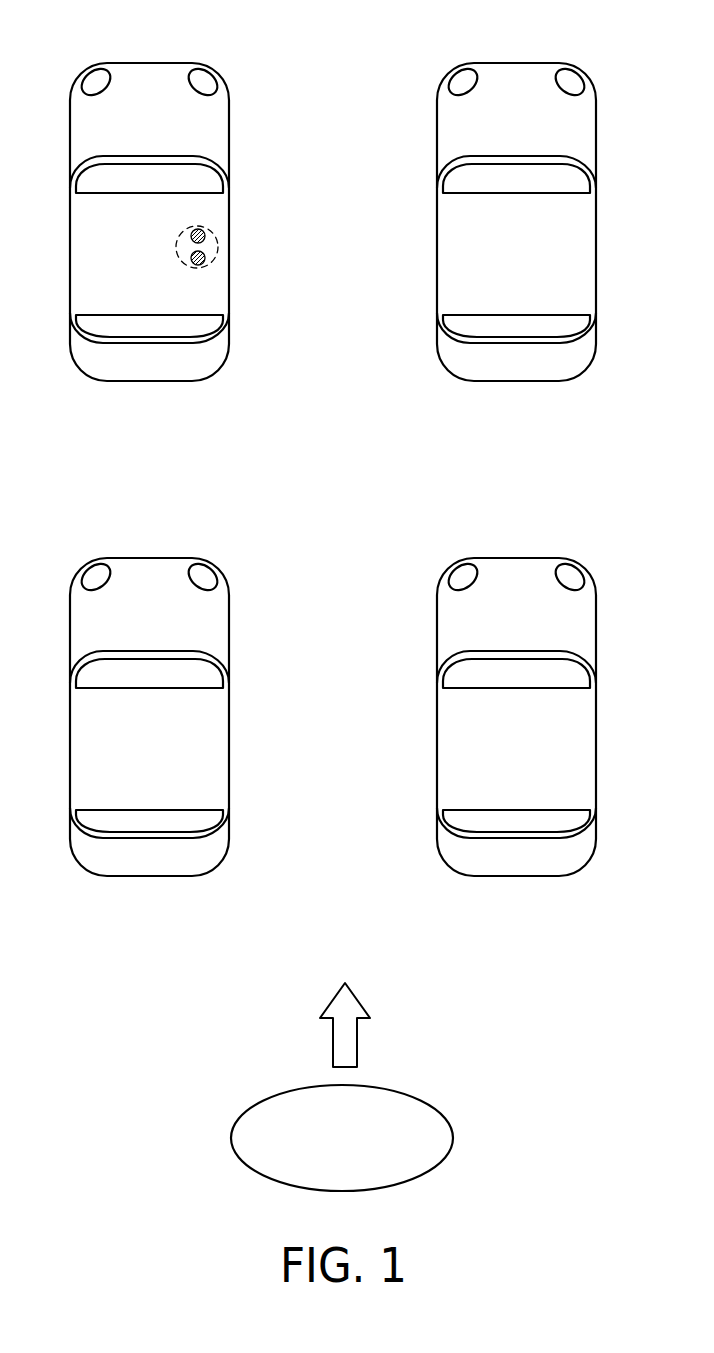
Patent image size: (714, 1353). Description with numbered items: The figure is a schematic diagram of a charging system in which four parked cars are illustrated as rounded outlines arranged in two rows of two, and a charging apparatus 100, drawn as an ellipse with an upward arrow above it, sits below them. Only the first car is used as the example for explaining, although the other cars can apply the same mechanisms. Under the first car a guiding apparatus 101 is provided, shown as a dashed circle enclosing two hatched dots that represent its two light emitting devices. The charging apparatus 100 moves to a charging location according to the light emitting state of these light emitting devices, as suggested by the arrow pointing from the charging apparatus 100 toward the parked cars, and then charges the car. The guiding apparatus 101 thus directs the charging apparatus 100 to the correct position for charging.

The guiding apparatus 101 is at (236, 233).
The charging apparatus 100 is at (487, 1107).